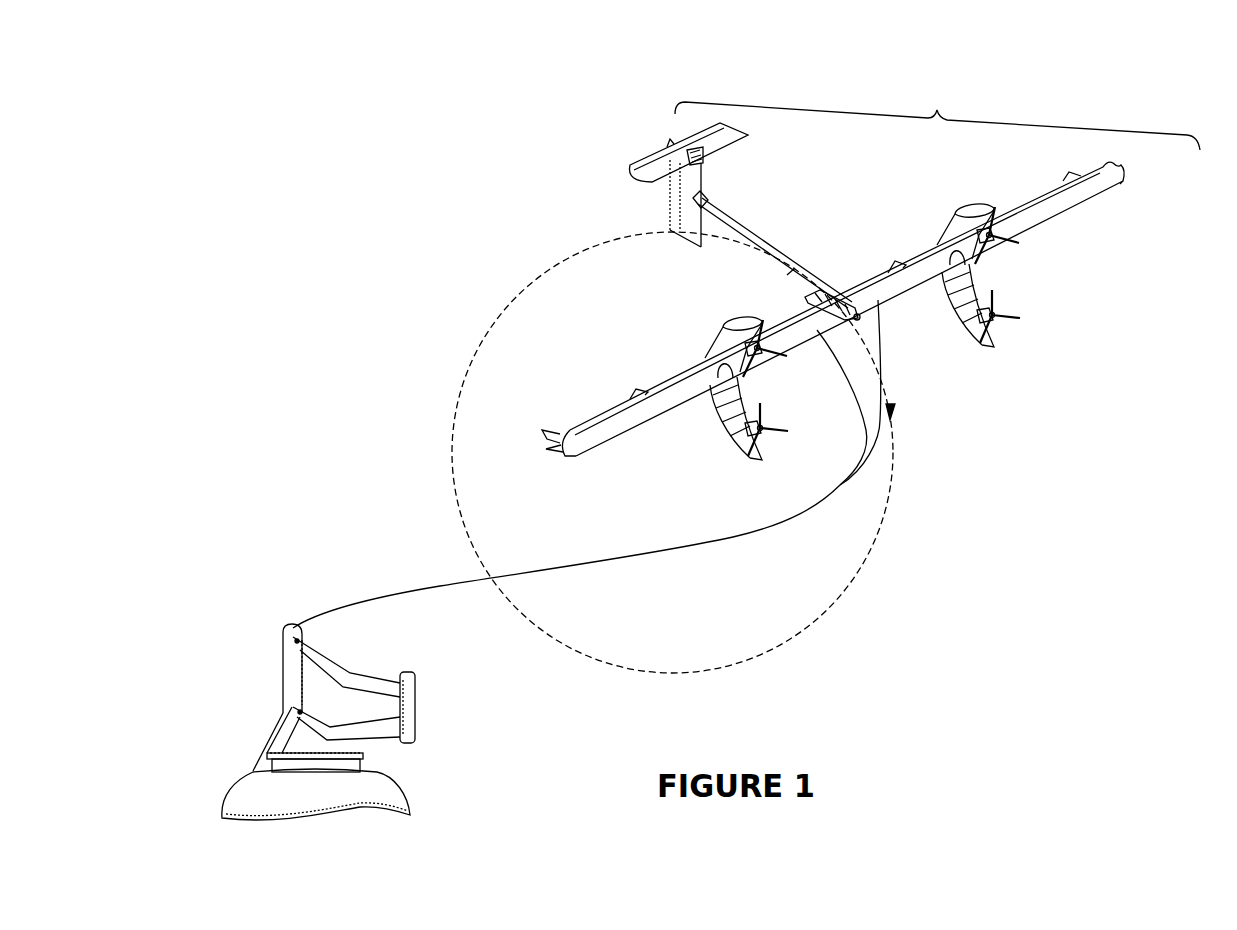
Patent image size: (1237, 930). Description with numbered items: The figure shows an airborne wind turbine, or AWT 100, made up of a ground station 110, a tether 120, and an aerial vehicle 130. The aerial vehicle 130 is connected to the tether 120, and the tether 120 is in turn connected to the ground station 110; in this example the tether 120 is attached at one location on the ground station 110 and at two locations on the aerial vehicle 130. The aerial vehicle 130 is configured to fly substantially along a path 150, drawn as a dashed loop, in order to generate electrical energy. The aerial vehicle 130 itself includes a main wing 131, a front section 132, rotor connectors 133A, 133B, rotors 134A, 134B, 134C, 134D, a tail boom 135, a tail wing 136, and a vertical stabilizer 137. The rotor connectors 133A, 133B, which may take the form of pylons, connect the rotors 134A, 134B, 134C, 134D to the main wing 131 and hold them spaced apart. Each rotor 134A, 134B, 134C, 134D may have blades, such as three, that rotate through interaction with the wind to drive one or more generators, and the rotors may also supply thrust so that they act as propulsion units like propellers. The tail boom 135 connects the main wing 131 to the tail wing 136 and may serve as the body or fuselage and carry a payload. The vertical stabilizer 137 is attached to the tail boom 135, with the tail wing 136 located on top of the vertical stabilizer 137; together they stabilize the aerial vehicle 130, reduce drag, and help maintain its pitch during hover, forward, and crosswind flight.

The airborne wind turbine 100 is at (287, 279).
The ground station 110 is at (295, 678).
The tether 120 is at (398, 591).
The aerial vehicle 130 is at (937, 115).
The main wing 131 is at (893, 287).
The front section 132 is at (859, 320).
The rotor connector 133A is at (950, 213).
The rotor connector 133B is at (720, 334).
The rotor 134A is at (993, 243).
The rotor 134B is at (1005, 323).
The rotor 134C is at (763, 354).
The rotor 134D is at (763, 434).
The tail boom 135 is at (757, 237).
The tail wing 136 is at (738, 122).
The vertical stabilizer 137 is at (692, 239).
The path 150 is at (515, 303).